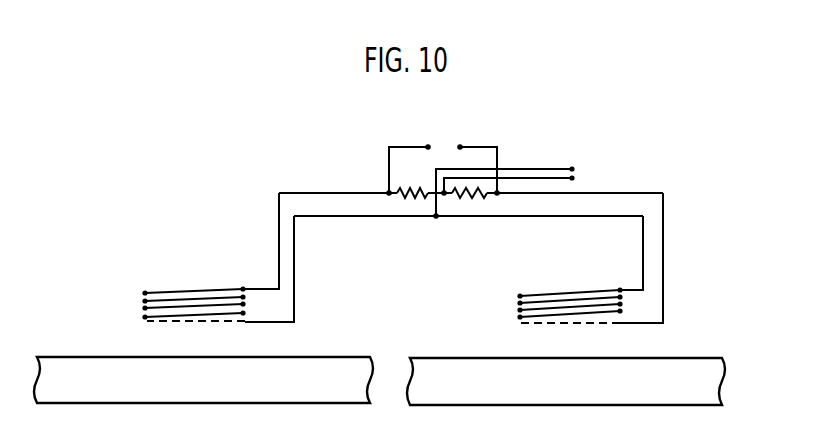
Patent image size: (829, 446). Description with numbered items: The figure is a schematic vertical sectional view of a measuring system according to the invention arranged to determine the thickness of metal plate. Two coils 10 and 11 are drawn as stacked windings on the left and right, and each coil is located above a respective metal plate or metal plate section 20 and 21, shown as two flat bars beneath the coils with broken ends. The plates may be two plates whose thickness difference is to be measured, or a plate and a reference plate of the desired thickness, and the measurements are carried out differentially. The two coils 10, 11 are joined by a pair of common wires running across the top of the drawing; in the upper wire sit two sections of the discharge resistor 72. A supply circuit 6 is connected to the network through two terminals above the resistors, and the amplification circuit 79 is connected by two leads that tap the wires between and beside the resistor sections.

The supply circuit 6 is at (428, 145).
The amplification circuit 79 is at (575, 168).
The discharge resistor 72 is at (413, 199).
The coil 10 is at (209, 290).
The coil 11 is at (560, 291).
The metal plate 20 is at (335, 356).
The metal plate 21 is at (434, 357).